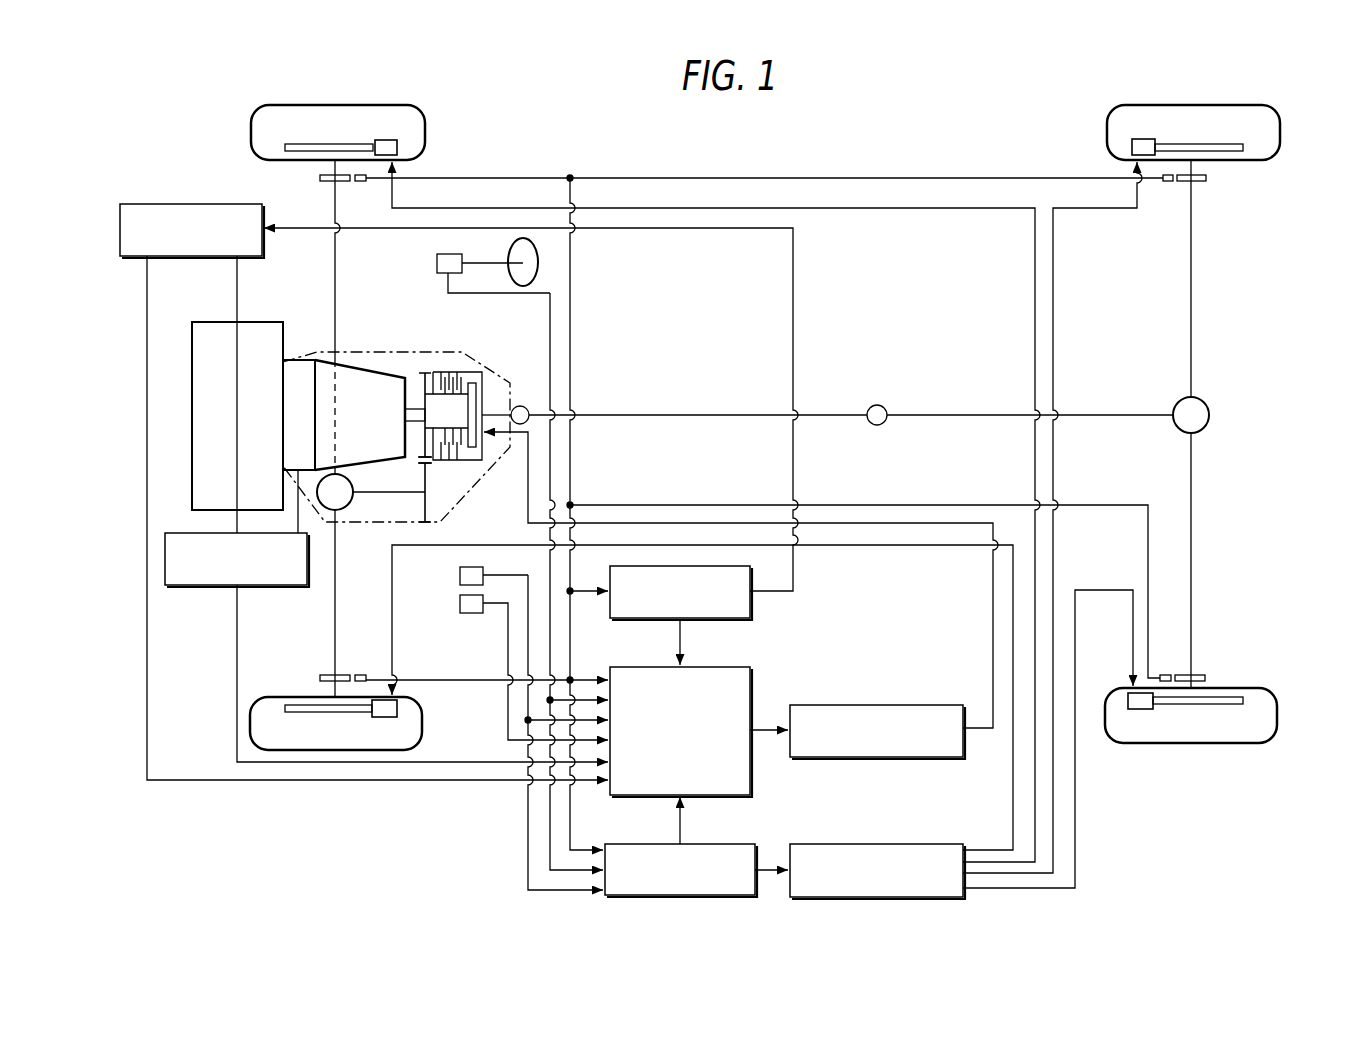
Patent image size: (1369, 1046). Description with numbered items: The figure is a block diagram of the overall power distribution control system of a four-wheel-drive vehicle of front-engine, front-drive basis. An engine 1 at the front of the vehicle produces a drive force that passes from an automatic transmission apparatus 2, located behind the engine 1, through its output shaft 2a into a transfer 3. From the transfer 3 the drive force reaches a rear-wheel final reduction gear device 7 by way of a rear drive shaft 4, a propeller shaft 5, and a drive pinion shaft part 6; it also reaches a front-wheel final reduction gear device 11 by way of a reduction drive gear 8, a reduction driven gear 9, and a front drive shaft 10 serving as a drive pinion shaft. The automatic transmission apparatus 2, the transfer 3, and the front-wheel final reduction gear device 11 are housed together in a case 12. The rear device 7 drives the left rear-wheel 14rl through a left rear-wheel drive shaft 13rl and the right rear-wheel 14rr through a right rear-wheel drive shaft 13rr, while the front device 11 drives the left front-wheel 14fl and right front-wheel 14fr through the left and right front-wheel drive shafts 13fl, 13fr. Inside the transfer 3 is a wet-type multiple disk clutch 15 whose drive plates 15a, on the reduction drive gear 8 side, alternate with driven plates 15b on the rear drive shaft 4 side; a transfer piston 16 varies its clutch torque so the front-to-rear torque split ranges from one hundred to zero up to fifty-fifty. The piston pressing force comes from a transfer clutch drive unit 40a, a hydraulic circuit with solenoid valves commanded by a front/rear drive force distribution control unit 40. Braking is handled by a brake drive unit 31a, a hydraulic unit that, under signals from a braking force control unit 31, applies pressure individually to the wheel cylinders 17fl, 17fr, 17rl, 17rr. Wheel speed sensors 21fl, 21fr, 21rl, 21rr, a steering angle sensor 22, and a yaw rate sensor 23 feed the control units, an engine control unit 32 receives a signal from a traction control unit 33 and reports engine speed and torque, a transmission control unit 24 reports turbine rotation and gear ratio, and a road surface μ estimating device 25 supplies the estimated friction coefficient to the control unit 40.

The engine 1 is at (211, 322).
The automatic transmission apparatus 2 is at (322, 355).
The output shaft 2a is at (406, 408).
The transfer 3 is at (484, 417).
The rear drive shaft 4 is at (500, 413).
The propeller shaft 5 is at (680, 414).
The drive pinion shaft part 6 is at (952, 414).
The rear-wheel final reduction gear device 7 is at (1210, 415).
The reduction drive gear 8 is at (424, 373).
The reduction driven gear 9 is at (428, 471).
The front drive shaft 10 is at (415, 470).
The front-wheel final reduction gear device 11 is at (342, 512).
The case 12 is at (342, 350).
The right front-wheel drive shaft 13fr is at (335, 281).
The left front-wheel drive shaft 13fl is at (335, 626).
The right rear-wheel drive shaft 13rr is at (1193, 212).
The left rear-wheel drive shaft 13rl is at (1193, 616).
The right front-wheel 14fr is at (249, 128).
The left front-wheel 14fl is at (280, 697).
The right rear-wheel 14rr is at (1280, 130).
The left rear-wheel 14rl is at (1277, 711).
The wet-type multiple disk clutch 15 is at (492, 385).
The drive plates 15a is at (450, 377).
The driven plates 15b is at (457, 385).
The transfer piston 16 is at (484, 459).
The right front-wheel wheel cylinder 17fr is at (398, 152).
The left front-wheel wheel cylinder 17fl is at (398, 713).
The right rear-wheel wheel cylinder 17rr is at (1132, 148).
The left rear-wheel wheel cylinder 17rl is at (1140, 709).
The wheel speed sensor 21fr is at (361, 182).
The wheel speed sensor 21fl is at (362, 674).
The wheel speed sensor 21rr is at (1166, 182).
The wheel speed sensor 21rl is at (1165, 674).
The steering angle sensor 22 is at (437, 260).
The yaw rate sensor 23 is at (460, 576).
The transmission control unit 24 is at (200, 587).
The road surface μ estimating device 25 is at (460, 604).
The braking force control unit 31 is at (715, 844).
The brake drive unit 31a is at (880, 844).
The engine control unit 32 is at (227, 204).
The traction control unit 33 is at (644, 620).
The front/rear drive force distribution control unit 40 is at (712, 667).
The transfer clutch drive unit 40a is at (880, 705).